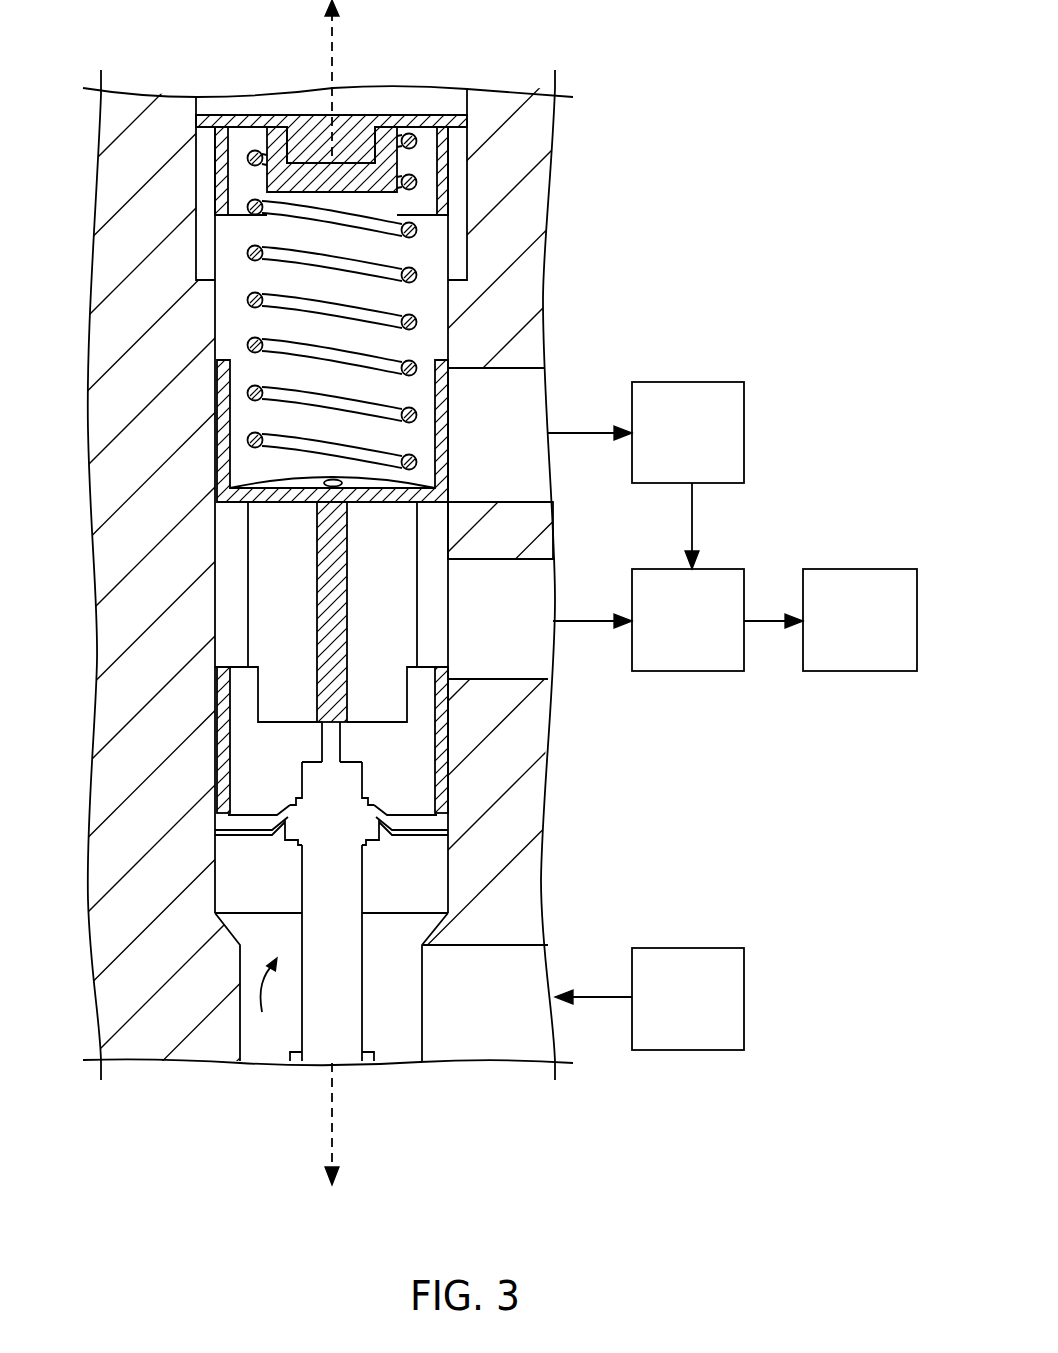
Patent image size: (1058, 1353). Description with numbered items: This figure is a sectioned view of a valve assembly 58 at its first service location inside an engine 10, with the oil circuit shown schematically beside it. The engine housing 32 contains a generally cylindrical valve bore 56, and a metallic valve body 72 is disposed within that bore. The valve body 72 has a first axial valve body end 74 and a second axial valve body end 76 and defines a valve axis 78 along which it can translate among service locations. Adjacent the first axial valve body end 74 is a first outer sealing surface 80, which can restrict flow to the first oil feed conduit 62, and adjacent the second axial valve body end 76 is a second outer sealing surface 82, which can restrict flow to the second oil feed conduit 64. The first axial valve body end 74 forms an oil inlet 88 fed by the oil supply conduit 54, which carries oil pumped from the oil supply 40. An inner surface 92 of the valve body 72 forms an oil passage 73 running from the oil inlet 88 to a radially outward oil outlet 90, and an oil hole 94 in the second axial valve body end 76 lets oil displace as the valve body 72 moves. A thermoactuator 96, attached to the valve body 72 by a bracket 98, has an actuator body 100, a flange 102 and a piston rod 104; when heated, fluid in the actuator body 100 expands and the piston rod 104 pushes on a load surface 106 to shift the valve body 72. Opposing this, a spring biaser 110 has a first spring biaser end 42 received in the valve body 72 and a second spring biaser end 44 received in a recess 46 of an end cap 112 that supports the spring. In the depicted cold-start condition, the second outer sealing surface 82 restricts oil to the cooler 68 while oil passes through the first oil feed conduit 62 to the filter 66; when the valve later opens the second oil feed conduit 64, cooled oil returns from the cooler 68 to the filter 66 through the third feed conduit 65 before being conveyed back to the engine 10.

The engine 10 is at (882, 569).
The engine housing 32 is at (90, 880).
The oil supply 40 is at (724, 948).
The first spring biaser end 42 is at (418, 462).
The second spring biaser end 44 is at (409, 132).
The recess 46 is at (196, 214).
The oil supply conduit 54 is at (553, 963).
The valve bore 56 is at (467, 88).
The valve assembly 58 is at (529, 676).
The first oil feed conduit 62 is at (553, 640).
The second oil feed conduit 64 is at (546, 401).
The third feed conduit 65 is at (690, 511).
The filter 66 is at (722, 569).
The cooler 68 is at (723, 382).
The valve body 72 is at (247, 548).
The oil passage 73 is at (388, 686).
The first axial valve body end 74 is at (452, 815).
The second axial valve body end 76 is at (448, 366).
The valve axis 78 is at (328, 46).
The first outer sealing surface 80 is at (450, 701).
The second outer sealing surface 82 is at (450, 402).
The oil inlet 88 is at (421, 946).
The oil outlet 90 is at (417, 547).
The inner surface 92 is at (317, 614).
The oil hole 94 is at (324, 483).
The thermoactuator 96 is at (268, 999).
The bracket 98 is at (255, 838).
The actuator body 100 is at (363, 1024).
The flange 102 is at (380, 838).
The piston rod 104 is at (343, 742).
The load surface 106 is at (316, 728).
The spring biaser 110 is at (247, 298).
The end cap 112 is at (328, 194).